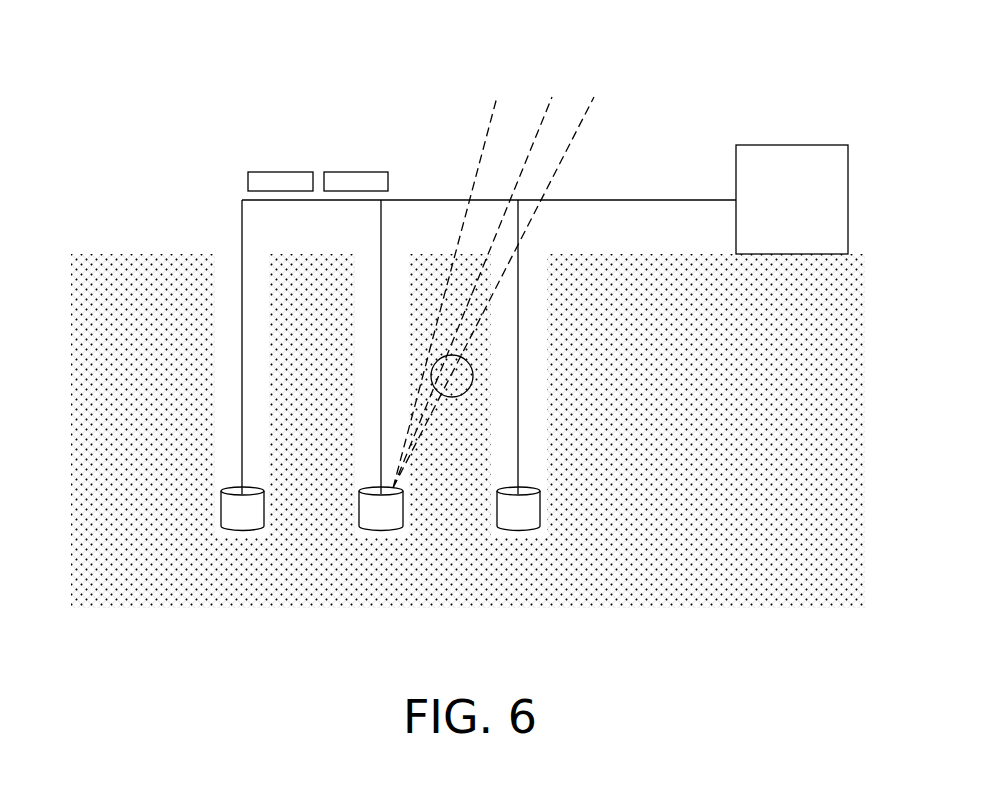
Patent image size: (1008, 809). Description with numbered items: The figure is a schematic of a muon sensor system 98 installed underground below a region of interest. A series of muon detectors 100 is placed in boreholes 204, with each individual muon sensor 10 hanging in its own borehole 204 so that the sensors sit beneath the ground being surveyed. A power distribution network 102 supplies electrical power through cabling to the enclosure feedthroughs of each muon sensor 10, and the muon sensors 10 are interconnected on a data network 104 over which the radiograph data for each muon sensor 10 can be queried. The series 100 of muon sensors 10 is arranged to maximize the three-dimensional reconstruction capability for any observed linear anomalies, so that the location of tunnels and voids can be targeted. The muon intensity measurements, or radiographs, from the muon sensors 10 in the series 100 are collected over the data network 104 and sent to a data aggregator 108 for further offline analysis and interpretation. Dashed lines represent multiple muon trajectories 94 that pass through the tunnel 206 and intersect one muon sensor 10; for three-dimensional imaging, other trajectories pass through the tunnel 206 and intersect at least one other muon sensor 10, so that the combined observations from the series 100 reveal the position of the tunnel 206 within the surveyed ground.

The muon sensor system 98 is at (112, 108).
The series of muon detectors 100 is at (478, 578).
The power distribution network 102 is at (280, 179).
The data network 104 is at (357, 179).
The data aggregator 108 is at (796, 164).
The boreholes 204 is at (360, 360).
The beam paths 94 is at (568, 142).
The tunnel 206 is at (473, 376).
The muon sensor 10 is at (247, 507).